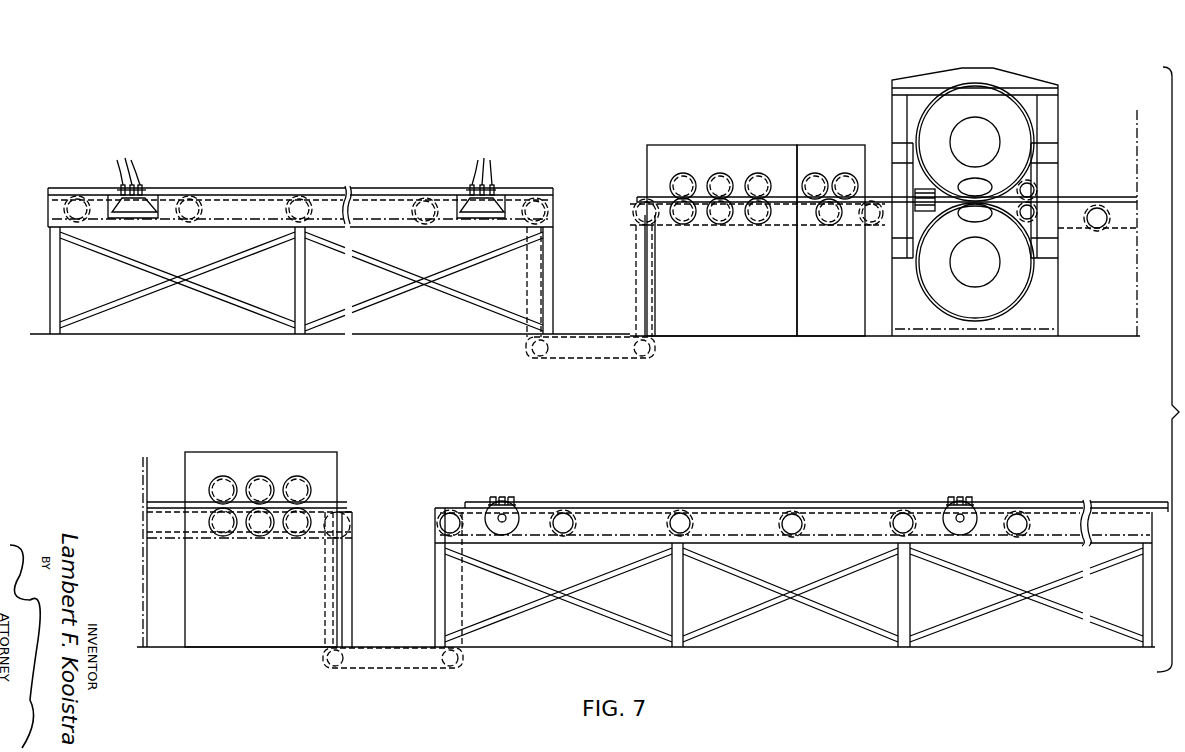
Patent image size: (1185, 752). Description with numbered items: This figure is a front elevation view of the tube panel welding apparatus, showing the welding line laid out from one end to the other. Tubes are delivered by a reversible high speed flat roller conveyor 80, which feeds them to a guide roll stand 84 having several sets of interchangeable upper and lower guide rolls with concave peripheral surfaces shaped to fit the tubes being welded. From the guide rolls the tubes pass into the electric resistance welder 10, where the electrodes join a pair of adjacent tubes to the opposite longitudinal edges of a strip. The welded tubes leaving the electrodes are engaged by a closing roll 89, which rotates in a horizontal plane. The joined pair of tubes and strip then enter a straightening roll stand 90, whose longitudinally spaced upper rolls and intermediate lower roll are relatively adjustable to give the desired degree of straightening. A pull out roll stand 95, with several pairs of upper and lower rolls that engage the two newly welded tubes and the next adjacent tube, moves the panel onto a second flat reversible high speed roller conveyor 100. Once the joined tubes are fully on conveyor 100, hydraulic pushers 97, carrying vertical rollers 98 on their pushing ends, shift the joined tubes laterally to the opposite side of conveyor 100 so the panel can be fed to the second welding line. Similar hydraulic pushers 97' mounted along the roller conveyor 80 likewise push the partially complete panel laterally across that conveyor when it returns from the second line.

The welder 10 is at (994, 51).
The flat roller conveyor 80 is at (767, 497).
The guide roll stand 84 is at (253, 462).
The closing roll 89 is at (913, 193).
The straightening roll stand 90 is at (827, 145).
The pull out roll stand 95 is at (727, 145).
The hydraulic pushers 97 is at (337, 184).
The hydraulic pushers 97' is at (756, 492).
The vertical rollers 98 is at (302, 164).
The roller conveyor 100 is at (347, 176).